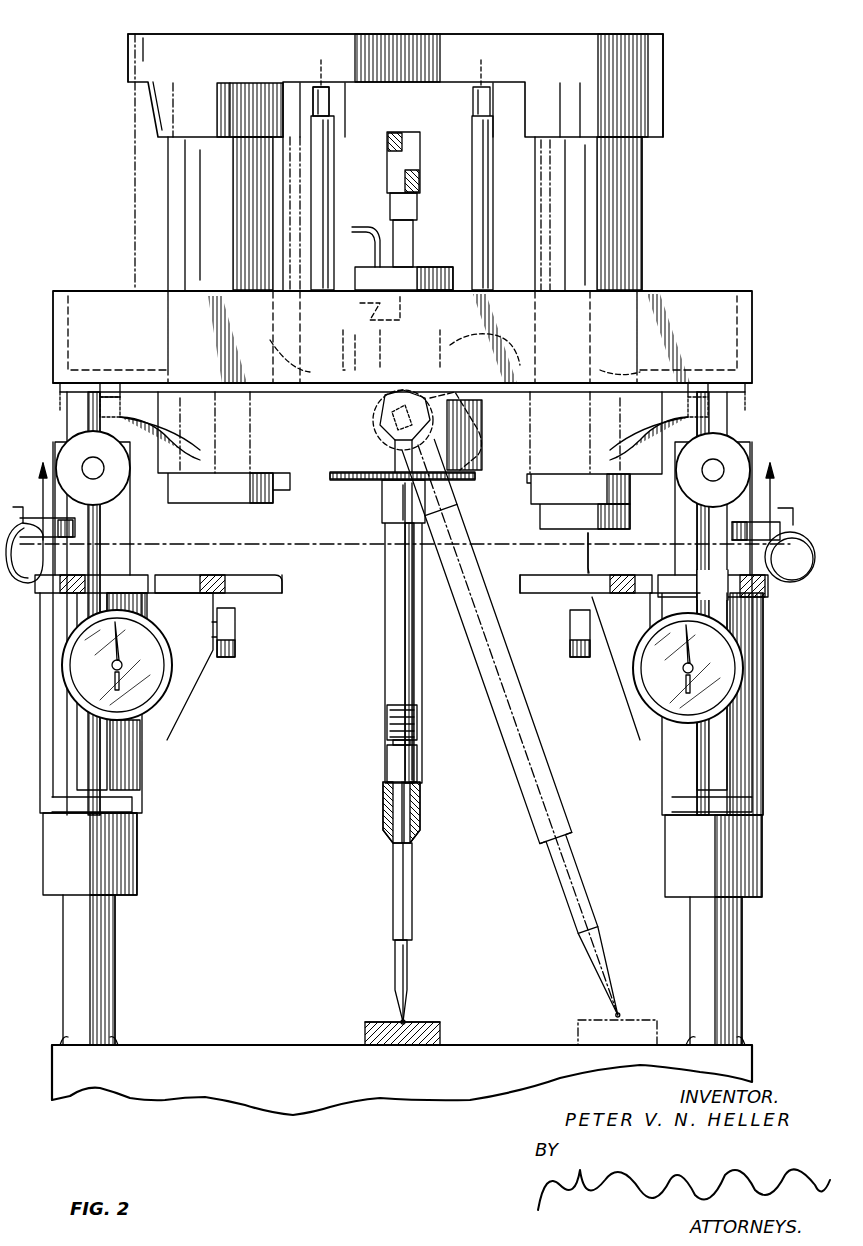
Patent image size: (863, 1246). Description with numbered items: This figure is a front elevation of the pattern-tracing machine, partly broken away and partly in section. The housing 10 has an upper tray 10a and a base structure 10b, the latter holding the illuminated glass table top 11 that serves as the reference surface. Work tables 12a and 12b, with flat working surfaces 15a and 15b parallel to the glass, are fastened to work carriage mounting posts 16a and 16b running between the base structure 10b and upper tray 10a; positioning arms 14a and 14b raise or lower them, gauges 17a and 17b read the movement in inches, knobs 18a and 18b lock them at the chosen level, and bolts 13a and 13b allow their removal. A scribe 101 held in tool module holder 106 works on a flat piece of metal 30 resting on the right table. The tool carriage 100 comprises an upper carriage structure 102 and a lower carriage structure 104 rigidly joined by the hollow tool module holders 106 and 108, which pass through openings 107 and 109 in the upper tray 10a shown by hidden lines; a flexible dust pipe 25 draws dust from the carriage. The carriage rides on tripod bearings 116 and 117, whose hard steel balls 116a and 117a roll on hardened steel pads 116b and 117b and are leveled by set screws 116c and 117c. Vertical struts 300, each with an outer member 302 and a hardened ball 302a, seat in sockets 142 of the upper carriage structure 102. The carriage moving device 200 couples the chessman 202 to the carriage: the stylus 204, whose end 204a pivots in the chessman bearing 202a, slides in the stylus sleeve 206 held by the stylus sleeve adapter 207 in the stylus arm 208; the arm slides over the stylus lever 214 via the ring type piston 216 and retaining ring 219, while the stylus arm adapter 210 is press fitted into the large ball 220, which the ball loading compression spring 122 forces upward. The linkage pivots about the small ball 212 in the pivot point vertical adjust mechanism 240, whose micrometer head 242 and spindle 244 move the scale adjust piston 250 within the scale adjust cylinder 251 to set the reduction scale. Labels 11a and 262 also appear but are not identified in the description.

The housing 10 is at (750, 1036).
The upper tray 10a is at (752, 305).
The base structure 10b is at (752, 1052).
The glass table top 11 is at (508, 1045).
The support plate 11a is at (362, 481).
The work table 12a is at (515, 595).
The work table 12b is at (295, 596).
The bolt 13a is at (580, 658).
The bolt 13b is at (238, 640).
The work table positioning arm 14a is at (802, 580).
The work table positioning arm 14b is at (23, 583).
The flat working surface 15a is at (535, 572).
The flat working surface 15b is at (270, 575).
The work carriage mounting post 16a is at (690, 942).
The work carriage mounting post 16b is at (115, 945).
The gauge 17a is at (650, 690).
The gauge 17b is at (170, 675).
The knob 18a is at (750, 483).
The knob 18b is at (130, 492).
The flexible dust pipe 25 is at (128, 125).
The flat piece of metal 30 is at (580, 570).
The tool carriage 100 is at (680, 50).
The scribe 101 is at (590, 552).
The upper carriage structure 102 is at (665, 94).
The lower carriage structure 104 is at (710, 422).
The tool module holder 106 is at (643, 196).
The opening 107 is at (630, 372).
The tool module holder 108 is at (160, 225).
The opening 109 is at (270, 340).
The bearing 116 is at (125, 410).
The hard steel ball 116a is at (110, 397).
The hardened steel pad 116b is at (125, 397).
The ball adjusting set screw 116c is at (100, 412).
The bearing 117 is at (683, 406).
The hard steel ball 117a is at (693, 397).
The hardened steel pad 117b is at (725, 385).
The ball adjusting set screw 117c is at (710, 406).
The ball loading compression spring 122 is at (387, 722).
The socket 142 is at (403, 63).
The carriage moving device 200 is at (419, 706).
The chessman 202 is at (365, 1030).
The bearing 202a is at (408, 1022).
The stylus 204 is at (395, 950).
The end of stylus 204a is at (400, 1022).
The stylus sleeve 206 is at (393, 902).
The stylus sleeve adapter 207 is at (390, 835).
The stylus arm 208 is at (385, 678).
The stylus arm adapter 210 is at (425, 488).
The small ball 212 is at (372, 406).
The stylus lever 214 is at (375, 426).
The ring type piston 216 is at (393, 743).
The retaining ring 219 is at (390, 752).
The large ball 220 is at (480, 435).
The pivot point vertical adjust mechanism 240 is at (430, 185).
The micrometer head 242 is at (387, 153).
The micrometer spindle 244 is at (343, 338).
The scale adjust piston 250 is at (520, 336).
The scale adjust cylinder 251 is at (360, 300).
The shoulder 262 is at (410, 225).
The vertical strut 300 is at (470, 123).
The outer member 302 is at (312, 216).
The hardened ball 302a is at (473, 92).